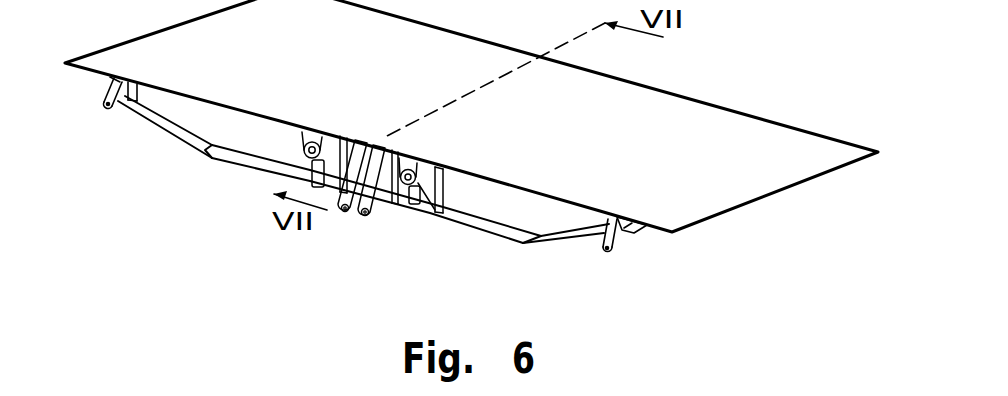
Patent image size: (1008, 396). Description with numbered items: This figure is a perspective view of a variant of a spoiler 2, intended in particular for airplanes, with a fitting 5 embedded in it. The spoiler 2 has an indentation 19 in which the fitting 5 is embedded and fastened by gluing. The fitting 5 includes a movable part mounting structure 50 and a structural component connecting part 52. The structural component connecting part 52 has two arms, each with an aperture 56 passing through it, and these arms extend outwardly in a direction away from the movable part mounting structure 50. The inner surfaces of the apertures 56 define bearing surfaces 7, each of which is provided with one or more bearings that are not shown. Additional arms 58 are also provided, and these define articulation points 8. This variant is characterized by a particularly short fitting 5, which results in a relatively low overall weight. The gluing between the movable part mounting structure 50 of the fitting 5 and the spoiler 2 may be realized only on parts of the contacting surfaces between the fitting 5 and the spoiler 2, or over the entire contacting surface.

The spoiler 2 is at (688, 130).
The fitting 5 is at (116, 110).
The bearing surfaces 7 is at (318, 160).
The articulation points 8 is at (361, 217).
The indentation 19 is at (243, 127).
The movable part mounting structure 50 is at (447, 165).
The structural component connecting part 52 is at (393, 207).
The aperture 56 is at (380, 139).
The additional arms 58 is at (340, 213).